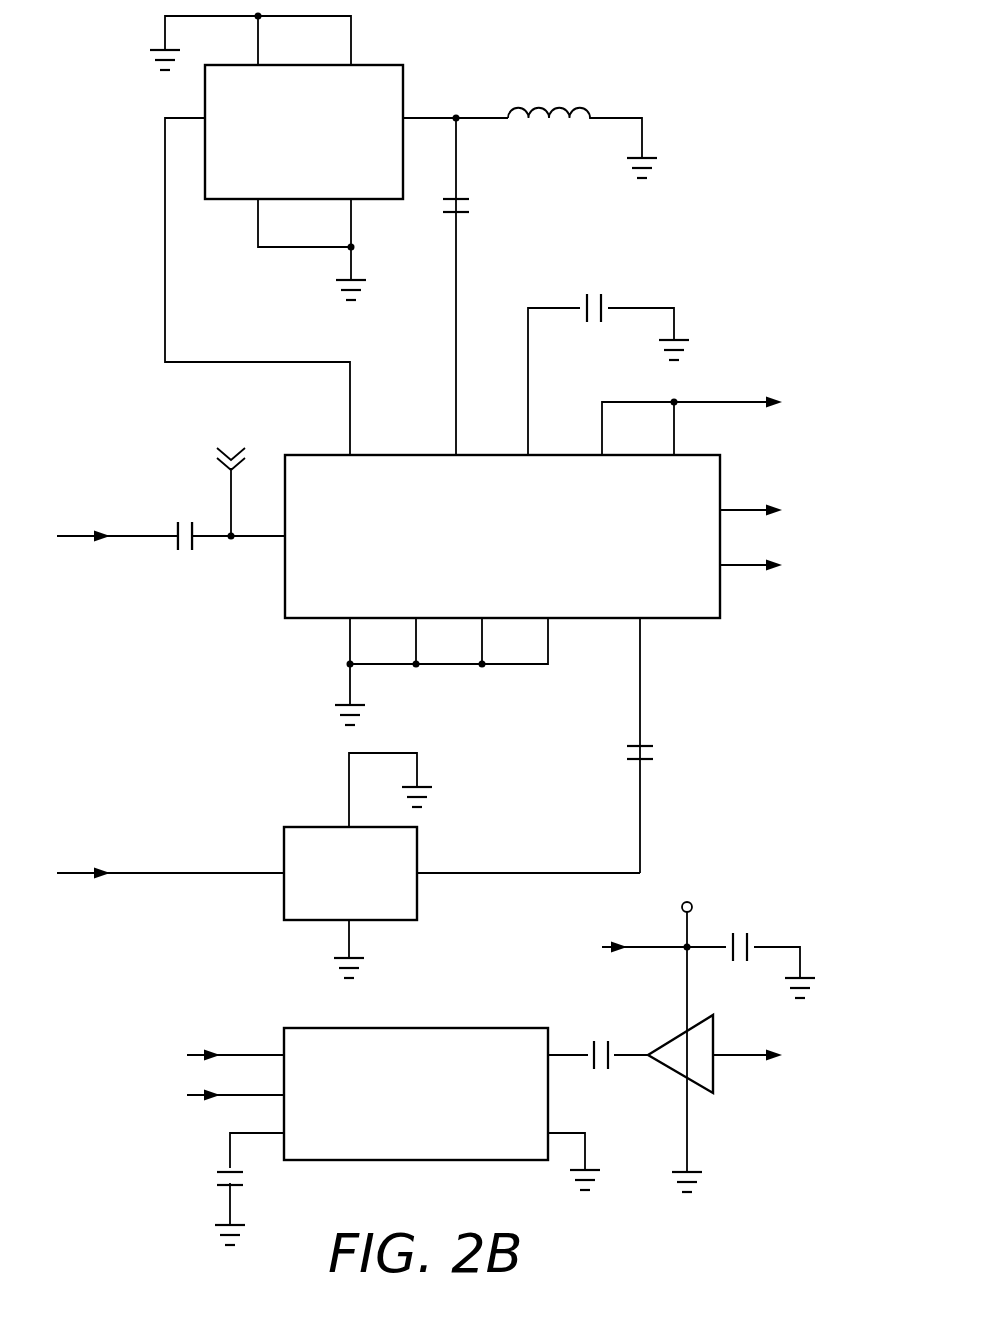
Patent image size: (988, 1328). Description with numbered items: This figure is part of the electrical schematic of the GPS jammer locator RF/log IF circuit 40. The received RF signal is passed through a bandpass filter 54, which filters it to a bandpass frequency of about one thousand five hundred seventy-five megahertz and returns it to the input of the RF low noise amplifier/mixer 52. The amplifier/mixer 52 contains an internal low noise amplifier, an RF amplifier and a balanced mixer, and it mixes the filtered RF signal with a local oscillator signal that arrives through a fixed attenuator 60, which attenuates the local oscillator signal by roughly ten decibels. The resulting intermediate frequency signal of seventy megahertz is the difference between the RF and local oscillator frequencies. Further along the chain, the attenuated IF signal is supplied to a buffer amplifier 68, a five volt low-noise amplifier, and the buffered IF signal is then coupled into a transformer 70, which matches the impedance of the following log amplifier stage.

The GPS jammer locator RF/log IF circuit 40 is at (634, 66).
The bandpass filter 54 is at (390, 74).
The RF low noise amplifier/mixer 52 is at (683, 606).
The fixed attenuator 60 is at (305, 838).
The transformer 70 is at (413, 1038).
The buffer amplifier 68 is at (705, 1078).